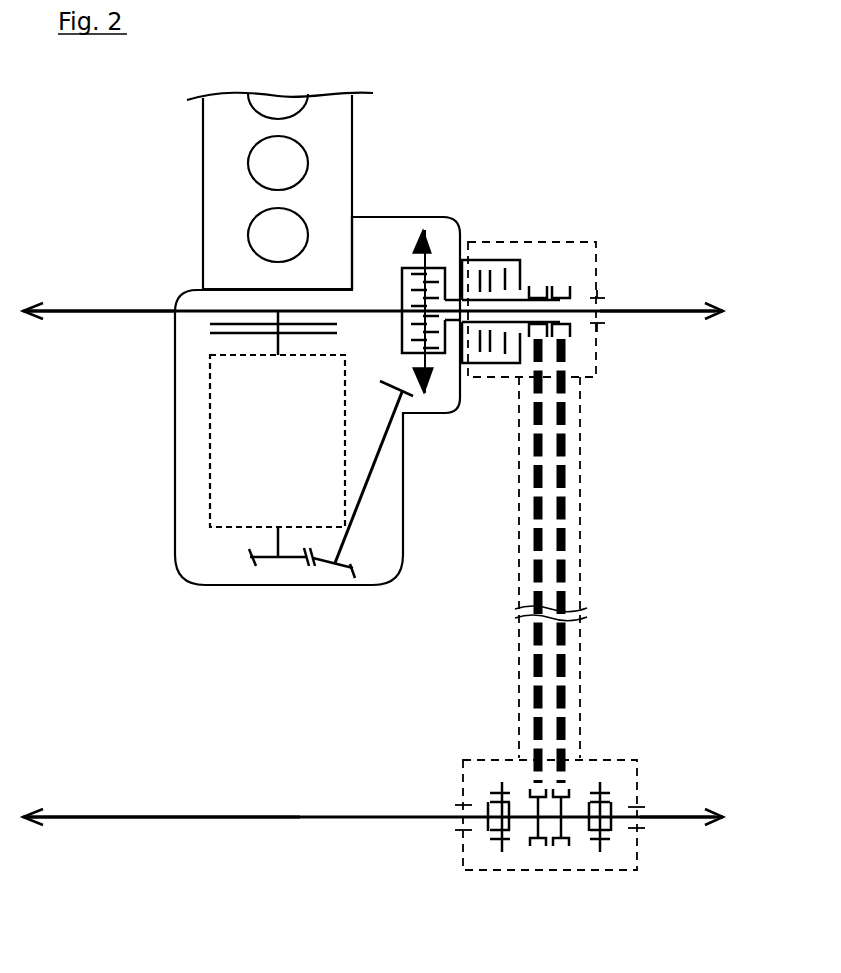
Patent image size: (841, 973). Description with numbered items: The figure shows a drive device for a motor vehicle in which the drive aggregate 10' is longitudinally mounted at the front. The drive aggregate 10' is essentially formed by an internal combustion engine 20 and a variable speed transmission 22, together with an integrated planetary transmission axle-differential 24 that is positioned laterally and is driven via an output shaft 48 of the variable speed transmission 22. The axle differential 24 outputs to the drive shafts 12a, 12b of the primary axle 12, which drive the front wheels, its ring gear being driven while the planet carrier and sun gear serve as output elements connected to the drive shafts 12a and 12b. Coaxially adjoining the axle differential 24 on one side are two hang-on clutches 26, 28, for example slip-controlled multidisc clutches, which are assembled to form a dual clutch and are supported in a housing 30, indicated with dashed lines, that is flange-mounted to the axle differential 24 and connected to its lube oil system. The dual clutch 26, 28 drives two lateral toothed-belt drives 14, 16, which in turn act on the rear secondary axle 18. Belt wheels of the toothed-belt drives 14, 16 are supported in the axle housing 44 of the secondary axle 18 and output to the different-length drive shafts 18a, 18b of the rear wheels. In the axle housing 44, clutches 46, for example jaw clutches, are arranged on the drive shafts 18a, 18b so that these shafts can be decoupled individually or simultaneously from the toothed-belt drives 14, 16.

The drive aggregate 10' is at (337, 320).
The primary axle 12 is at (628, 283).
The drive shaft 12a is at (107, 312).
The drive shaft 12b is at (667, 315).
The toothed-belt drive 14 is at (533, 533).
The toothed-belt drive 16 is at (565, 565).
The secondary axle 18 is at (605, 742).
The drive shaft 18a is at (173, 818).
The drive shaft 18b is at (688, 818).
The internal combustion engine 20 is at (247, 143).
The variable speed transmission 22 is at (297, 459).
The planetary transmission axle-differential 24 is at (400, 257).
The hang-on clutch 26 is at (480, 258).
The hang-on clutch 28 is at (520, 257).
The housing 30 is at (573, 238).
The axle housing 44 is at (573, 870).
The clutch 46 is at (480, 783).
The output shaft 48 is at (372, 478).